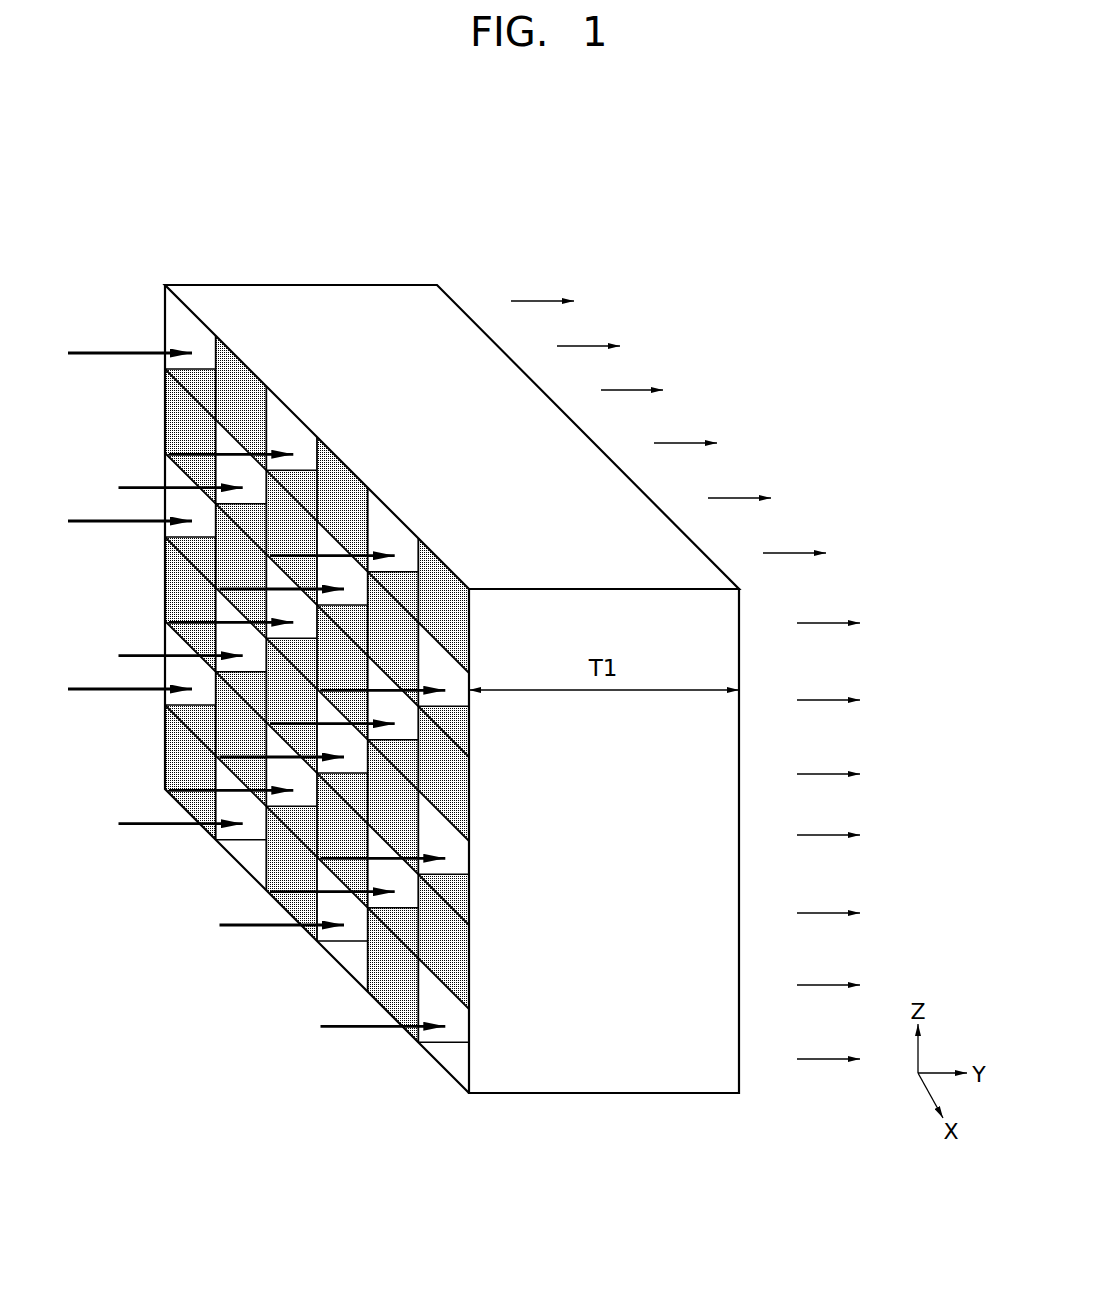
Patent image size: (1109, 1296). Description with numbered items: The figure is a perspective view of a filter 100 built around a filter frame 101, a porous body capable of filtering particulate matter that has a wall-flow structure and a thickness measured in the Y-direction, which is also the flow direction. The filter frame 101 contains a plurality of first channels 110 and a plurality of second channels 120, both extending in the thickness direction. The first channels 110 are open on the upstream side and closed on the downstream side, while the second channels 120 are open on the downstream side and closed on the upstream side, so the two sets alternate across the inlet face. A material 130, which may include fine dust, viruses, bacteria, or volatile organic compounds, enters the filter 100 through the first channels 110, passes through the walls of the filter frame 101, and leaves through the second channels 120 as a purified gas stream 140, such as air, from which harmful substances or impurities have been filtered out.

The filter 100 is at (708, 305).
The filter frame 101 is at (395, 281).
The first channels 110 is at (290, 425).
The second channels 120 is at (247, 392).
The material 130 is at (111, 351).
The purified gas stream 140 is at (543, 300).